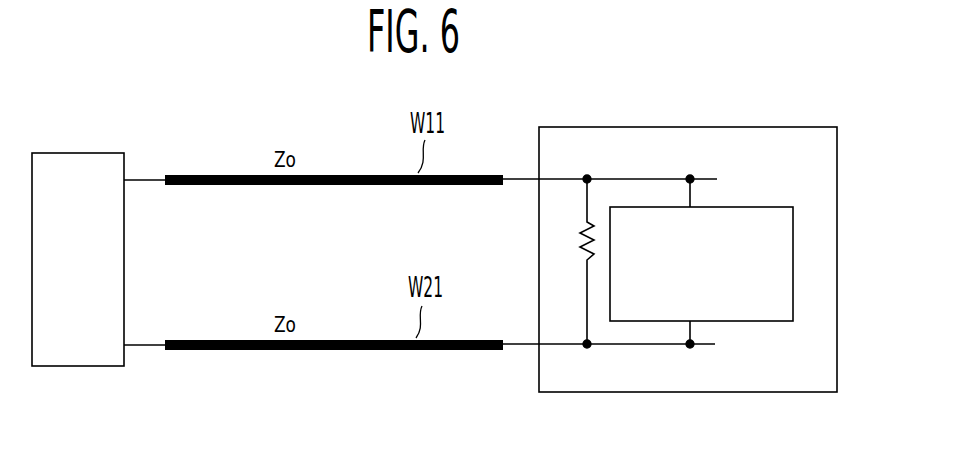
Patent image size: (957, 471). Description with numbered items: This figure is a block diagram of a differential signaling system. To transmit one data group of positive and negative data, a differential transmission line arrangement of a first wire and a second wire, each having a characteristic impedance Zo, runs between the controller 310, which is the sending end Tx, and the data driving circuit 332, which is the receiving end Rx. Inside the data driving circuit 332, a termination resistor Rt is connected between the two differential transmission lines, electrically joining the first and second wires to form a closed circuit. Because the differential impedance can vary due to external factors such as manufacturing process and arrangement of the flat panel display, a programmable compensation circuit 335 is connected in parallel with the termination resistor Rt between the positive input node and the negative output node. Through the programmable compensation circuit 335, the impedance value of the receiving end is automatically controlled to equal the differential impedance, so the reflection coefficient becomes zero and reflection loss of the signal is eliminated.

The controller 310 is at (77, 153).
The data driving circuit 332 is at (757, 127).
The programmable compensation circuit 335 is at (793, 242).